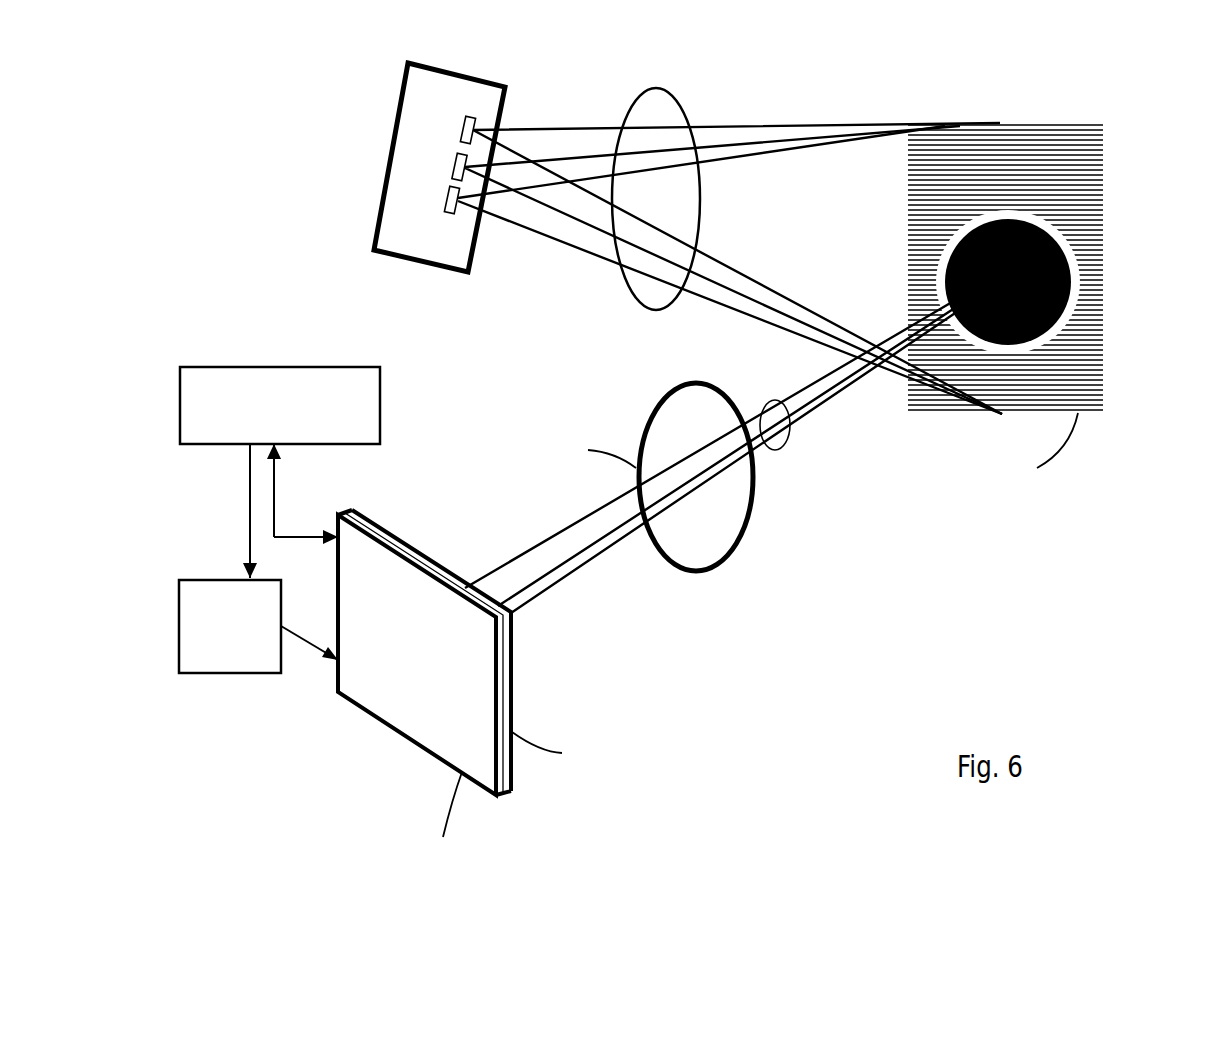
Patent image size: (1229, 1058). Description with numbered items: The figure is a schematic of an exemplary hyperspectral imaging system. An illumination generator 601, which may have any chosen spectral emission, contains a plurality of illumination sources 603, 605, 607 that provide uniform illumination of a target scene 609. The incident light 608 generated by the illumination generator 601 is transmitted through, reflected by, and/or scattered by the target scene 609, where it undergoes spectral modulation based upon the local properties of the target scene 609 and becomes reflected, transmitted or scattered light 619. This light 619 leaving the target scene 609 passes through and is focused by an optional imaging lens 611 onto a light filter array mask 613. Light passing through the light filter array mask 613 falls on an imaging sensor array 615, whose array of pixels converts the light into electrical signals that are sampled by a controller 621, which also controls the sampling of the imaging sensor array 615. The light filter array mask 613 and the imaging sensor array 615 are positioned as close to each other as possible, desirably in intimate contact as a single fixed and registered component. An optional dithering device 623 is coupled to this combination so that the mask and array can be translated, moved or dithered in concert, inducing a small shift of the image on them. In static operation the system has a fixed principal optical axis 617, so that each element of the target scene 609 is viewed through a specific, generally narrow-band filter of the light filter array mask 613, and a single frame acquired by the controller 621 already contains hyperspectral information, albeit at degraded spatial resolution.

The illumination generator 601 is at (503, 113).
The illumination source 603 is at (463, 122).
The illumination source 605 is at (455, 160).
The illumination source 607 is at (448, 195).
The incident light 608 is at (690, 103).
The target scene 609 is at (1107, 203).
The imaging lens 611 is at (667, 397).
The light filter array mask 613 is at (512, 680).
The imaging sensor array 615 is at (438, 757).
The principal optical axis 617 is at (820, 420).
The reflected, transmitted or scattered light 619 is at (783, 460).
The controller 621 is at (228, 577).
The dithering device 623 is at (332, 367).